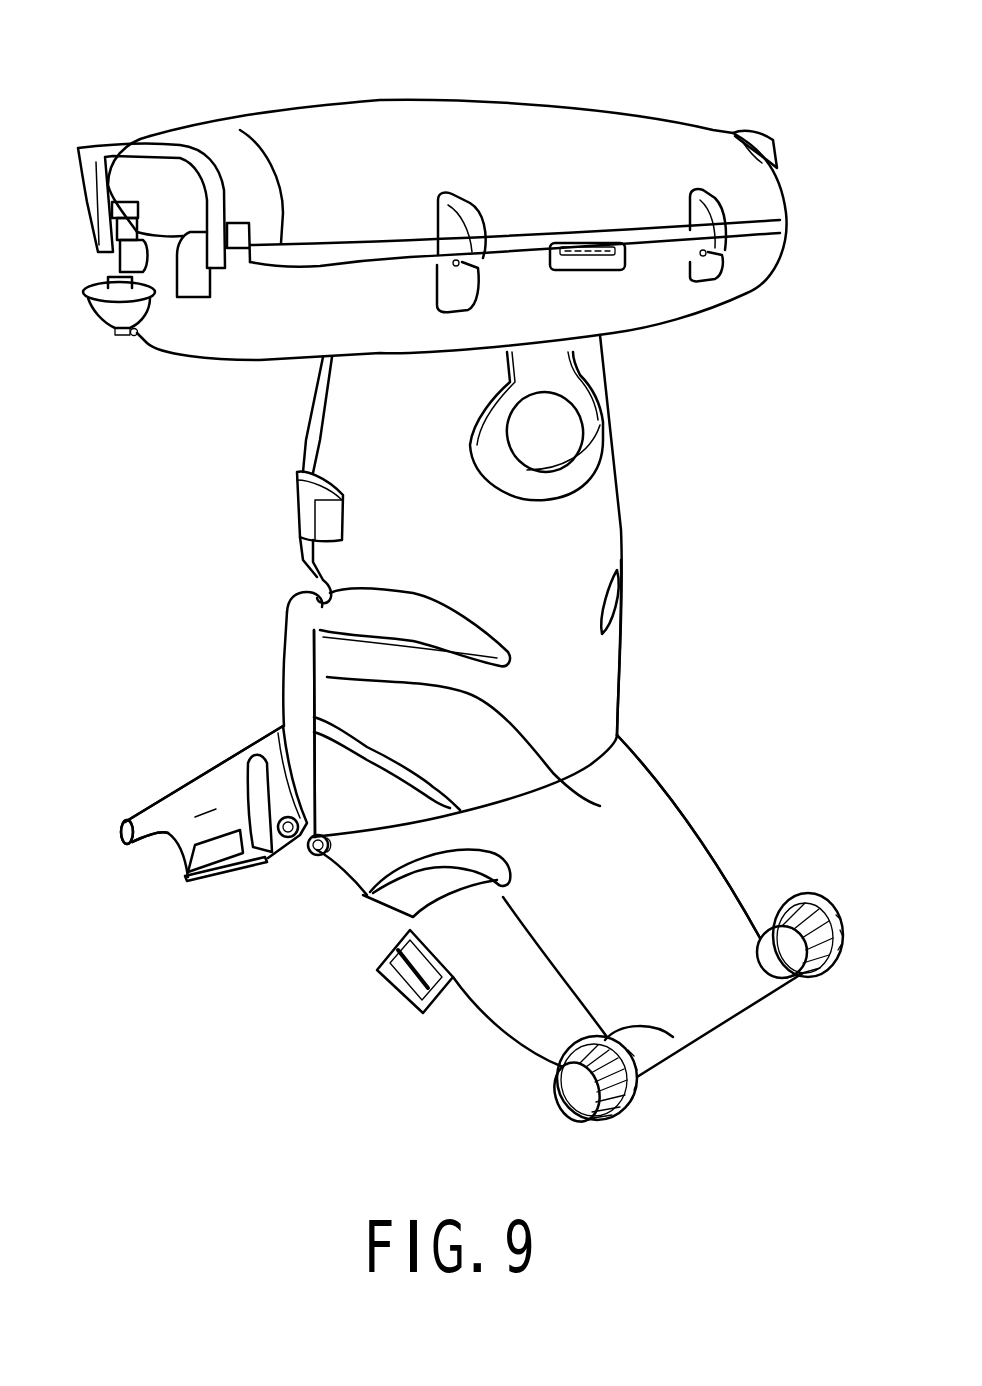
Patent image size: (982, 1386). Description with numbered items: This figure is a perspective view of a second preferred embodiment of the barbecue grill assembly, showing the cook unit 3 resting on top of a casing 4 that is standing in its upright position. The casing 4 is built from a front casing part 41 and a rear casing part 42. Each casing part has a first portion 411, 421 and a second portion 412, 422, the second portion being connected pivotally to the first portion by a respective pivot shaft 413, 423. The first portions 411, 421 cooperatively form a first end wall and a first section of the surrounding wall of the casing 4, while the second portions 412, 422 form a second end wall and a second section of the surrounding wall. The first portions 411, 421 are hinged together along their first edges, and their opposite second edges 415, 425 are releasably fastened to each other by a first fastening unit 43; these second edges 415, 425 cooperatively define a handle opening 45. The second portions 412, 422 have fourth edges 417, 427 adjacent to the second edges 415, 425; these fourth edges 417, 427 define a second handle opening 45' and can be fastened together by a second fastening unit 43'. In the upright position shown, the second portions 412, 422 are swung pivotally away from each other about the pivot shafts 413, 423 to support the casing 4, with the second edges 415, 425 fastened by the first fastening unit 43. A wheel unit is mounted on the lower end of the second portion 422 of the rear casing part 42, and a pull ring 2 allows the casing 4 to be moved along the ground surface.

The pull ring 2 is at (580, 480).
The cook unit 3 is at (420, 98).
The casing 4 is at (637, 628).
The front casing part 41 is at (270, 695).
The rear casing part 42 is at (640, 738).
The first fastening unit 43 is at (269, 519).
The second fastening unit 43' is at (405, 1025).
The handle opening 45 is at (510, 595).
The second handle opening 45' is at (326, 976).
The first portion 411 is at (293, 643).
The second portion 412 is at (152, 833).
The pivot shaft 413 is at (297, 843).
The second edge 415 is at (313, 660).
The fourth edge 417 is at (184, 880).
The first portion 421 is at (603, 673).
The second portion 422 is at (683, 977).
The pivot shaft 423 is at (322, 857).
The second edge 425 is at (600, 806).
The fourth edge 427 is at (487, 1023).